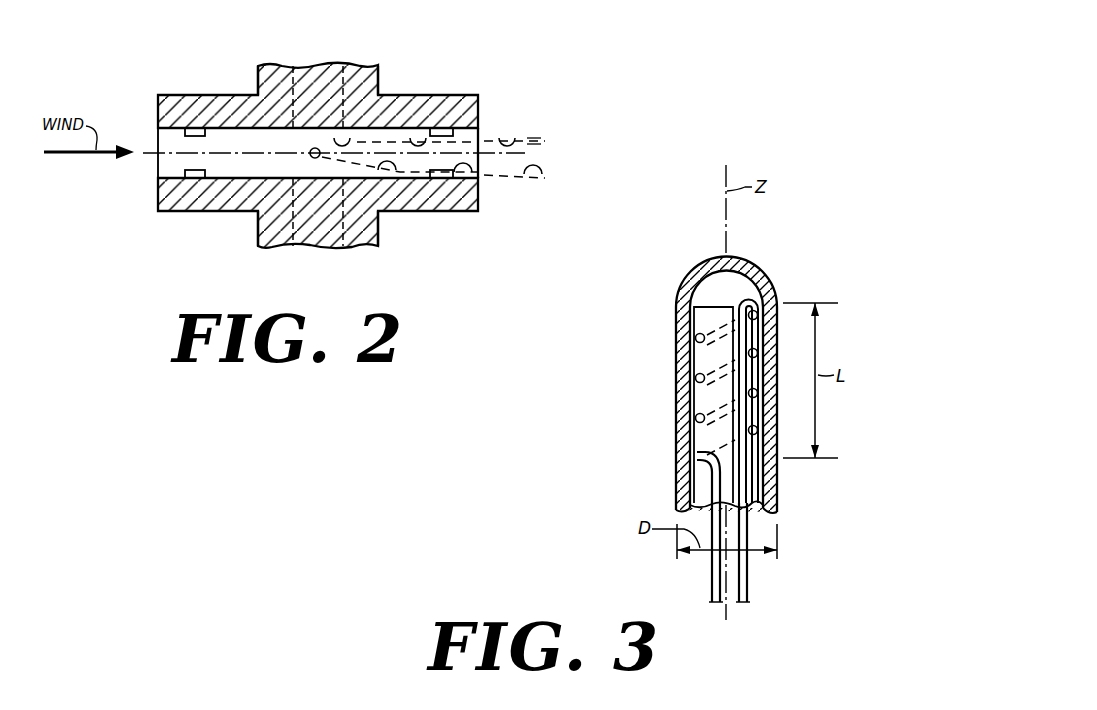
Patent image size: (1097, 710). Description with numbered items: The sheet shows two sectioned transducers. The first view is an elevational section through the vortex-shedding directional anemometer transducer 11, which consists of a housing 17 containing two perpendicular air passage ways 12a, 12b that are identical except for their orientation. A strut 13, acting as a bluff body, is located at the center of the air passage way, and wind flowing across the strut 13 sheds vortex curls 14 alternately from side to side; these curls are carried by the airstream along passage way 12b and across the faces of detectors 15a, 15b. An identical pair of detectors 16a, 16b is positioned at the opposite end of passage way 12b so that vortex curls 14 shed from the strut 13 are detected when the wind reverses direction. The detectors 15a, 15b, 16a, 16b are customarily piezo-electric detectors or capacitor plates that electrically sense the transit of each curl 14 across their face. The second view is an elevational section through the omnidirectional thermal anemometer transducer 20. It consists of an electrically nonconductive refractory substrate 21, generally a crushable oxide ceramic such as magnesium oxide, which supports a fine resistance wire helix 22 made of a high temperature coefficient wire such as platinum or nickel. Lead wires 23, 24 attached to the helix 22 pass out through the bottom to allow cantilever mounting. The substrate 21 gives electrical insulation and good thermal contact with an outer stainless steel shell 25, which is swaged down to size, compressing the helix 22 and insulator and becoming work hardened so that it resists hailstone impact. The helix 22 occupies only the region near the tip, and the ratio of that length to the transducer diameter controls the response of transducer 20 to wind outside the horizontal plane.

In FIG. 2, the vortex-shedding directional anemometer transducer 11 is at (425, 93).
In FIG. 2, the air passage way 12a is at (330, 250).
In FIG. 2, the air passage way 12b is at (167, 166).
In FIG. 2, the strut 13 is at (309, 153).
In FIG. 2, the vortex curls 14 is at (526, 178).
In FIG. 2, the detector 15a is at (458, 128).
In FIG. 2, the detector 15b is at (458, 178).
In FIG. 2, the detector 16a is at (195, 128).
In FIG. 2, the detector 16b is at (194, 178).
In FIG. 2, the housing 17 is at (318, 76).
In FIG. 3, the omnidirectional thermal anemometer transducer 20 is at (781, 291).
In FIG. 3, the refractory substrate 21 is at (752, 484).
In FIG. 3, the resistance wire helix 22 is at (698, 379).
In FIG. 3, the lead wire 23 is at (712, 582).
In FIG. 3, the lead wire 24 is at (747, 582).
In FIG. 3, the outer stainless steel shell 25 is at (676, 306).